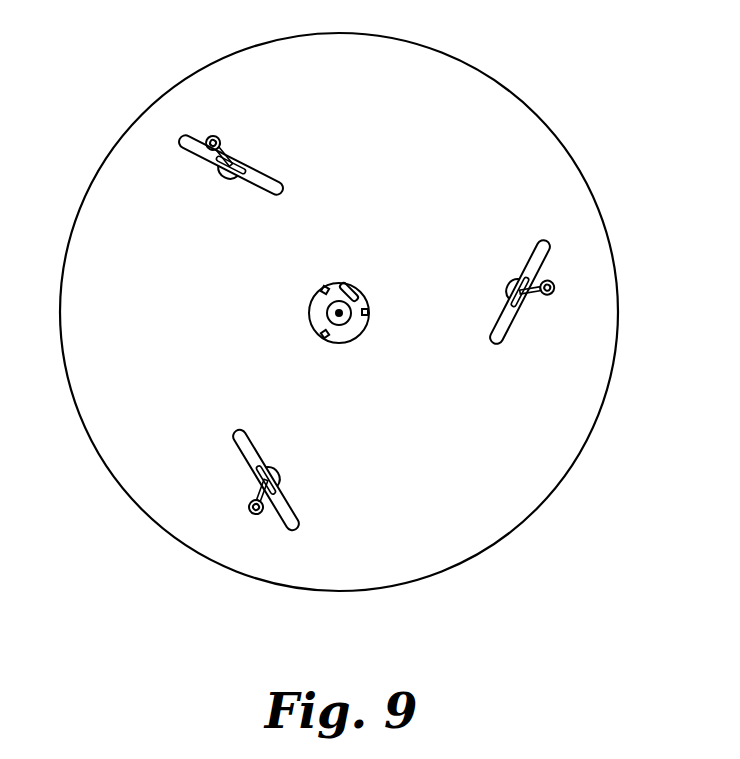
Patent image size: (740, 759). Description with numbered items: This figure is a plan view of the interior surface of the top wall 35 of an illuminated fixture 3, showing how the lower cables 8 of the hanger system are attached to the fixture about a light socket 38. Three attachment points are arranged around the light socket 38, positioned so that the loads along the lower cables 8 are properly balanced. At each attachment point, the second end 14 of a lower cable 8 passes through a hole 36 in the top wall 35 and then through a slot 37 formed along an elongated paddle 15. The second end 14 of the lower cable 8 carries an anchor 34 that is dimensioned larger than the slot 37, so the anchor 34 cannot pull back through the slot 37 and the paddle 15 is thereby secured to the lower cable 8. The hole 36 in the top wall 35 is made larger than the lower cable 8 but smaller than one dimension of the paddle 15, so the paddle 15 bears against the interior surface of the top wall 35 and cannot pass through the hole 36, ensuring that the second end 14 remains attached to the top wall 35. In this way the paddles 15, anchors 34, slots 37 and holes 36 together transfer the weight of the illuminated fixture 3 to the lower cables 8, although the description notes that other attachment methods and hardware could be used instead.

The illuminated fixture 3 is at (84, 430).
The lower cable 8 is at (237, 158).
The second end 14 is at (558, 290).
The paddle 15 is at (180, 143).
The anchor 34 is at (215, 136).
The top wall 35 is at (141, 390).
The hole 36 is at (222, 176).
The slot 37 is at (240, 185).
The light socket 38 is at (326, 314).